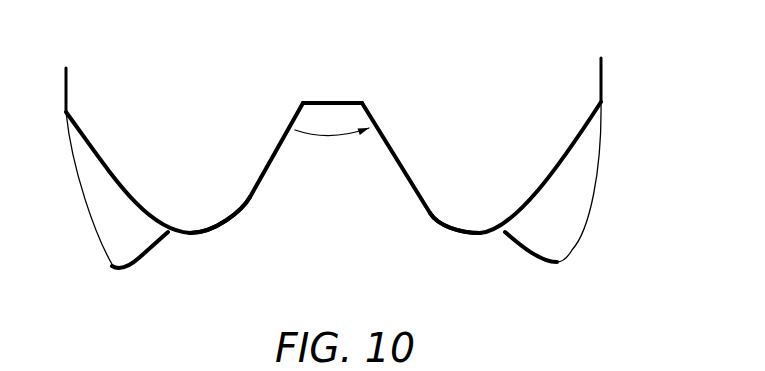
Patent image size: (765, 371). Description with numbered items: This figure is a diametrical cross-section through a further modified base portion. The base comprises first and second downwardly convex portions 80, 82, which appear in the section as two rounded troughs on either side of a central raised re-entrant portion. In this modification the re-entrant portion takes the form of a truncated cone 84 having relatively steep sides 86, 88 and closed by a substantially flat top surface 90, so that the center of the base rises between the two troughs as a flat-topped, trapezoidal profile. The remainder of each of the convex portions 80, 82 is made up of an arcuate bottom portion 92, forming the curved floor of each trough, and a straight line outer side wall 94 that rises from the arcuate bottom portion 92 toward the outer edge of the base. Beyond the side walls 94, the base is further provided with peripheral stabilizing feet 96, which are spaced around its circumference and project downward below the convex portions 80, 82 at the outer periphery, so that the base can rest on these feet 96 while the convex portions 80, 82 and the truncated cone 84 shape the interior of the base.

The first downwardly convex portion 80 is at (177, 210).
The second downwardly convex portion 82 is at (488, 200).
The truncated cone 84 is at (354, 138).
The side of truncated cone 86 is at (276, 152).
The side of truncated cone 88 is at (400, 168).
The flat top surface 90 is at (347, 103).
The arcuate bottom portion 92 is at (220, 229).
The straight line outer side wall 94 is at (110, 173).
The peripheral stabilizing feet 96 is at (140, 258).